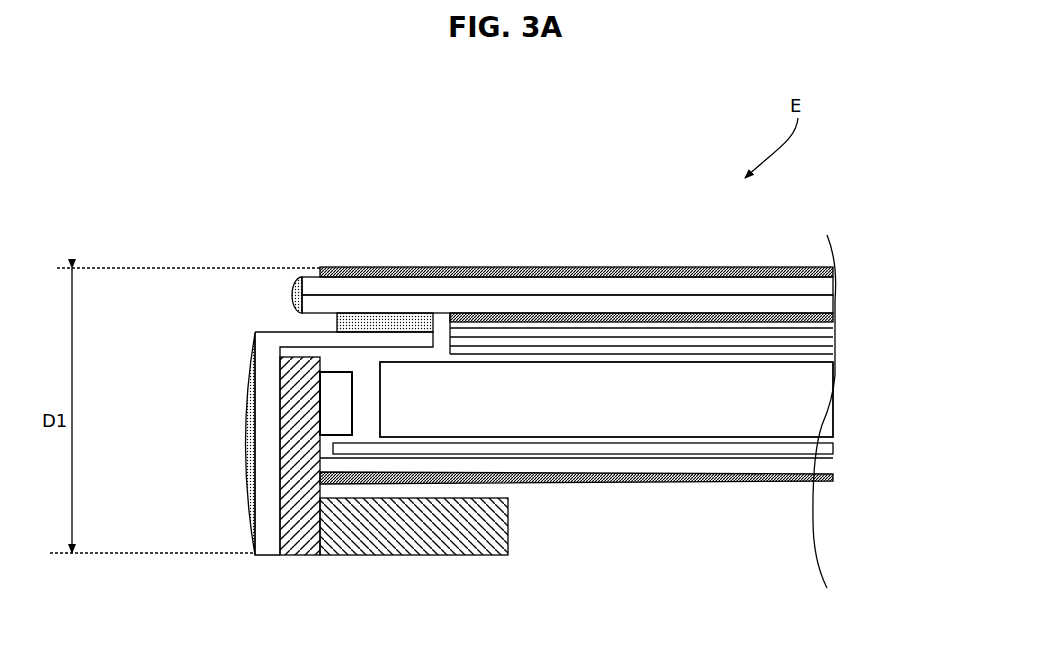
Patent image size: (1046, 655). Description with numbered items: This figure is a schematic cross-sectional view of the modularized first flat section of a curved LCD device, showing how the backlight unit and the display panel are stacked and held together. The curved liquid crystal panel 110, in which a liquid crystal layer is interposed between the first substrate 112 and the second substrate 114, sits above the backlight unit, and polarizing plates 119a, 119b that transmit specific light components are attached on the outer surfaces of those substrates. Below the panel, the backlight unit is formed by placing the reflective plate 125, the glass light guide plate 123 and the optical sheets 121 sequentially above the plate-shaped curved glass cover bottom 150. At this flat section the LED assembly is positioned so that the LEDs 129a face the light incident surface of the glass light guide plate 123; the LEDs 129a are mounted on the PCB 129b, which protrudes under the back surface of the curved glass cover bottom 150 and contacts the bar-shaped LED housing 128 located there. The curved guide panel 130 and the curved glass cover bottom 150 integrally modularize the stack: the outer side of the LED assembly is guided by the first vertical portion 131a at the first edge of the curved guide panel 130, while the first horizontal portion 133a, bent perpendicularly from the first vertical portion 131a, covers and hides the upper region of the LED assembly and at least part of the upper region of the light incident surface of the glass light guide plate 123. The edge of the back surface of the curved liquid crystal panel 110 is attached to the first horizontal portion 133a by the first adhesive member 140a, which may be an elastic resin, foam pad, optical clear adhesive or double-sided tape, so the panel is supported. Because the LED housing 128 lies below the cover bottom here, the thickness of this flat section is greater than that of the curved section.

The curved liquid crystal panel 110 is at (623, 302).
The first substrate 112 is at (820, 305).
The second substrate 114 is at (820, 287).
The polarizing plate 119a is at (752, 313).
The polarizing plate 119b is at (683, 267).
The optical sheets 121 is at (830, 337).
The glass light guide plate 123 is at (822, 402).
The reflective plate 125 is at (813, 447).
The curved glass cover bottom 150 is at (807, 467).
The first adhesive member 140a is at (378, 322).
The curved guide panel 130 is at (260, 433).
The first horizontal portion 133a is at (293, 332).
The first vertical portion 131a is at (247, 382).
The LEDs 129a is at (343, 420).
The PCB 129b is at (303, 402).
The LED housing 128 is at (392, 538).